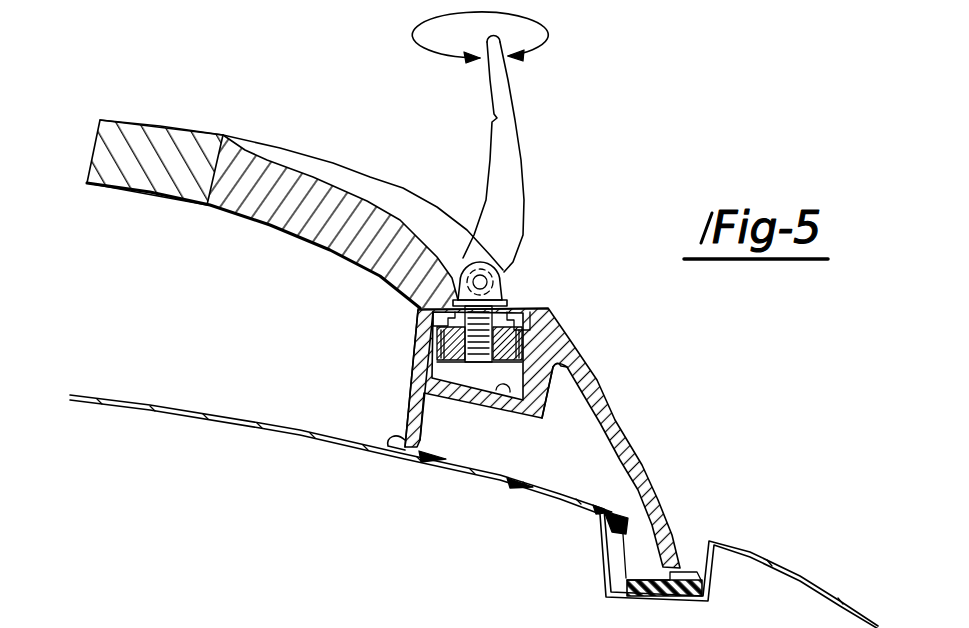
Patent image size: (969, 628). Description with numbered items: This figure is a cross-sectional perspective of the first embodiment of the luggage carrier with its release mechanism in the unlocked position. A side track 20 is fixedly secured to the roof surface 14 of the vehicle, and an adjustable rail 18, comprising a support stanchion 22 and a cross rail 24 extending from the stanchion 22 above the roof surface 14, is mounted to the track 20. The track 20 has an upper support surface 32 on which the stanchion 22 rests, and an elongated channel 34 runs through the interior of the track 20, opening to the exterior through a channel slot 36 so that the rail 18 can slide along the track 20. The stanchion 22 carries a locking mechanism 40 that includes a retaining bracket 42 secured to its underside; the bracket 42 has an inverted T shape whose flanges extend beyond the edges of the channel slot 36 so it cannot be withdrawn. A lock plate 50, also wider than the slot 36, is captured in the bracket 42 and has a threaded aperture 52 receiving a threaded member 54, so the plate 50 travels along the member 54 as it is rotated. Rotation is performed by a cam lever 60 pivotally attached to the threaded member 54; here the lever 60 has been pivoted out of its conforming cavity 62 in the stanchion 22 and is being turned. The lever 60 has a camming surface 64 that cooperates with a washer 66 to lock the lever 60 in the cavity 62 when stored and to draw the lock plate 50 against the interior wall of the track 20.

The roof surface 14 is at (118, 400).
The adjustable rail 18 is at (98, 126).
The side track 20 is at (662, 477).
The support stanchion 22 is at (345, 245).
The cross rail 24 is at (132, 189).
The upper support surface 32 is at (545, 307).
The elongated channel 34 is at (478, 388).
The channel slot 36 is at (518, 308).
The locking mechanism 40 is at (407, 426).
The retaining bracket 42 is at (424, 372).
The lock plate 50 is at (492, 344).
The threaded aperture 52 is at (465, 344).
The threaded member 54 is at (554, 376).
The cam lever 60 is at (507, 118).
The cavity 62 is at (350, 172).
The camming surface 64 is at (453, 303).
The washer 66 is at (514, 304).